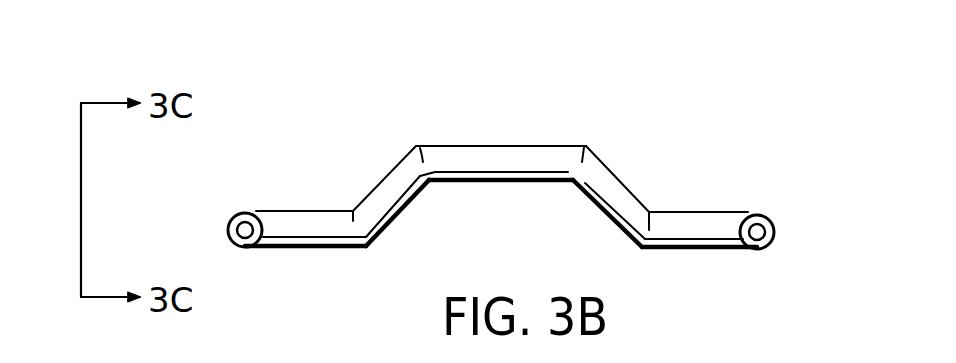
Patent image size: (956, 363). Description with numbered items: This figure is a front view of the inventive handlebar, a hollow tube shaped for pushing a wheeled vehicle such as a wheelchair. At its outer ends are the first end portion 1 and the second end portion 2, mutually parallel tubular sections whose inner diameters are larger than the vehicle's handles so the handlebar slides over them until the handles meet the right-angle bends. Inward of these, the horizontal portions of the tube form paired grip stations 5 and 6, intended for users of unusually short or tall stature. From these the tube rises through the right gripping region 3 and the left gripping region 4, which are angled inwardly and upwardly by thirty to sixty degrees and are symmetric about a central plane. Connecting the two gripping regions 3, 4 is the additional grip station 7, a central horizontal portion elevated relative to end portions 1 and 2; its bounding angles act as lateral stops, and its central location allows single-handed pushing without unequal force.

The first end portion 1 is at (237, 215).
The second end portion 2 is at (777, 238).
The right gripping region 3 is at (407, 205).
The left gripping region 4 is at (625, 182).
The grip station 5 is at (327, 248).
The grip station 6 is at (715, 250).
The additional grip station 7 is at (502, 153).